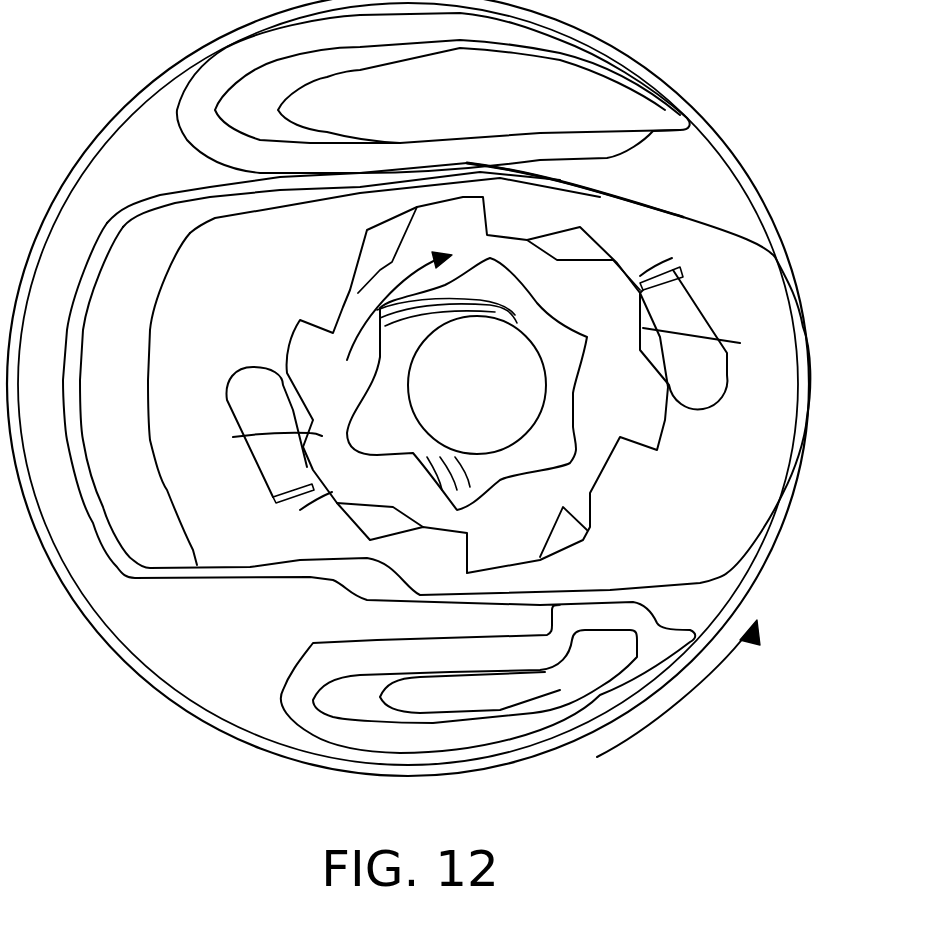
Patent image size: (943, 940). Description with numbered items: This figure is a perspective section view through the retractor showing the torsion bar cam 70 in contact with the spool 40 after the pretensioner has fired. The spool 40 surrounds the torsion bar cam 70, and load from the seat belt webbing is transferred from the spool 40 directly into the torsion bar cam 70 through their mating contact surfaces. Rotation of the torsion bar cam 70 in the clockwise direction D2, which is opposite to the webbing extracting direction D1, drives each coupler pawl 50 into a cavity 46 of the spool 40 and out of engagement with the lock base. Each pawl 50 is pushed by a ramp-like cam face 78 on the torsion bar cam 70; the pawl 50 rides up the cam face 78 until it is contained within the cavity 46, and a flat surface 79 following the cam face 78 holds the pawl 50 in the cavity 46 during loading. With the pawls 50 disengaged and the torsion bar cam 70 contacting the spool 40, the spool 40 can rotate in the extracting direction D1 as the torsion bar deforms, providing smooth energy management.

The spool 40 is at (780, 455).
The torsion bar cam 70 is at (620, 272).
The coupler pawl 50 is at (252, 390).
The cam face 78 is at (245, 437).
The cavity 46 is at (267, 490).
The flat surface 79 is at (300, 510).
The extracting direction D1 is at (690, 705).
The clockwise direction D2 is at (352, 303).